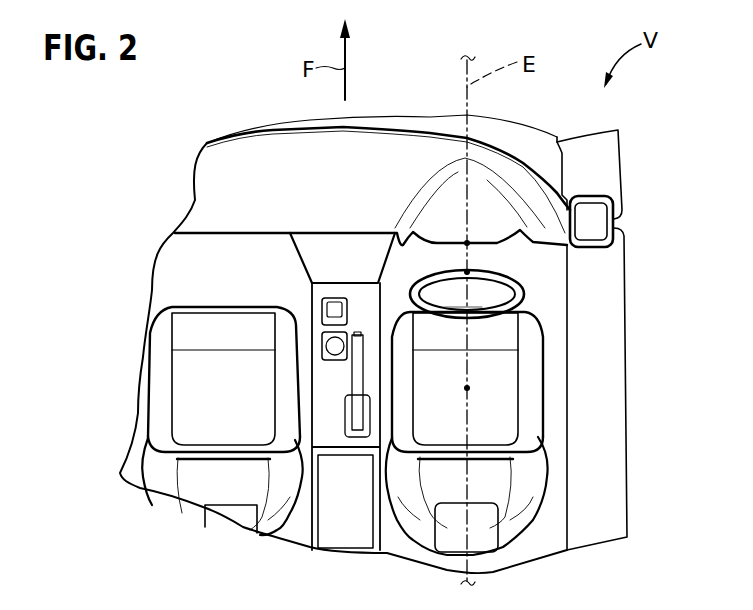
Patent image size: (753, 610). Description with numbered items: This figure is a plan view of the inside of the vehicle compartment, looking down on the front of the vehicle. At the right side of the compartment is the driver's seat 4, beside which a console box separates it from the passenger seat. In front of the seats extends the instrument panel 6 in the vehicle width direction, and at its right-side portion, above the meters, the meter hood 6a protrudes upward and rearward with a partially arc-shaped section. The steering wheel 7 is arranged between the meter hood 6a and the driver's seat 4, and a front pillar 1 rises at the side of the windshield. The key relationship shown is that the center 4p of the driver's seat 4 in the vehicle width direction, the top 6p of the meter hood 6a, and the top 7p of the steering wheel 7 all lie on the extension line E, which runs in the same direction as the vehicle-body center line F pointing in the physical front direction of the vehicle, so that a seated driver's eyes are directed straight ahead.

The front pillar 1 is at (612, 223).
The driver's seat 4 is at (543, 430).
The center of the driver's seat 4p is at (467, 388).
The instrument panel 6 is at (227, 215).
The meter hood 6a is at (438, 207).
The top of the meter hood 6p is at (467, 243).
The steering wheel 7 is at (523, 295).
The top of the steering wheel 7p is at (467, 272).